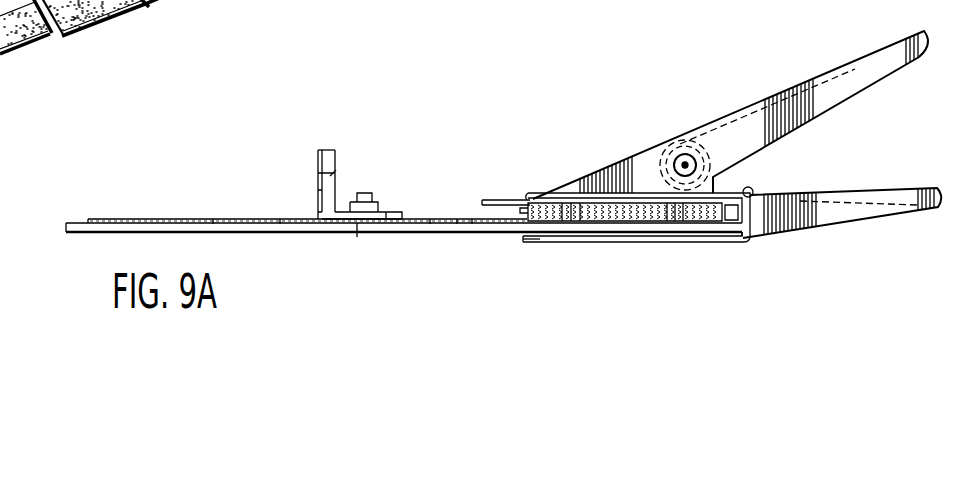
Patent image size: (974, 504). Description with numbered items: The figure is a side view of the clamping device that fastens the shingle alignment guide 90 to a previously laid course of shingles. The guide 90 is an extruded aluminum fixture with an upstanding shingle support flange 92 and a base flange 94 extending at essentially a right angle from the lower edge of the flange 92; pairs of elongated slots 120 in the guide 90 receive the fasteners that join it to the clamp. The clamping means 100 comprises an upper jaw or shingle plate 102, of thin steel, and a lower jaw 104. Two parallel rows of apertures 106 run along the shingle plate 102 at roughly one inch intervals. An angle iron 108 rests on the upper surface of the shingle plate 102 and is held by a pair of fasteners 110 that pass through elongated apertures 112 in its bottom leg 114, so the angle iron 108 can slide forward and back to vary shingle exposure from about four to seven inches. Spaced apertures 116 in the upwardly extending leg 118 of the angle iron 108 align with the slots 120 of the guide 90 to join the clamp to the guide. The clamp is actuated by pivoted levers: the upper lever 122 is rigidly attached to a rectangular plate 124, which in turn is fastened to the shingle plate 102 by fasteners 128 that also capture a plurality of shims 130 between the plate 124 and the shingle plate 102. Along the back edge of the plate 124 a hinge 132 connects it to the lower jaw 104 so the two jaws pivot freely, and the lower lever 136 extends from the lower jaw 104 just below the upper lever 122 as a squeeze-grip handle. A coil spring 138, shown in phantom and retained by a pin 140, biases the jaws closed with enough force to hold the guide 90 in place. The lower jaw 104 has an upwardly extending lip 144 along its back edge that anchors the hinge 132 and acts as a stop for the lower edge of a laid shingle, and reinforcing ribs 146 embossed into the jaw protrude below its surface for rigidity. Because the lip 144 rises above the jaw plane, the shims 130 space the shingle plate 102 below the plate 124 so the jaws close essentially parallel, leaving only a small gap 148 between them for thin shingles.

The alignment guide 90 is at (353, 157).
The shingle support flange 92 is at (319, 207).
The base flange 94 is at (112, 218).
The clamping means 100 is at (711, 172).
The shingle plate 102 is at (470, 232).
The lower jaw 104 is at (677, 238).
The apertures 106 is at (280, 228).
The angle iron 108 is at (341, 207).
The fasteners 110 is at (375, 205).
The elongated apertures 112 is at (390, 212).
The bottom leg 114 is at (405, 217).
The spaced apertures 116 is at (333, 174).
The upwardly extending leg 118 is at (330, 151).
The elongated slots 120 is at (318, 180).
The upper lever 122 is at (824, 72).
The rectangular plate 124 is at (494, 180).
The fasteners 128 is at (566, 210).
The shims 130 is at (522, 195).
The hinge 132 is at (750, 188).
The lower lever 136 is at (900, 190).
The coil spring 138 is at (710, 161).
The pin 140 is at (682, 163).
The lip 144 is at (745, 240).
The reinforcing ribs 146 is at (598, 243).
The gap 148 is at (508, 237).